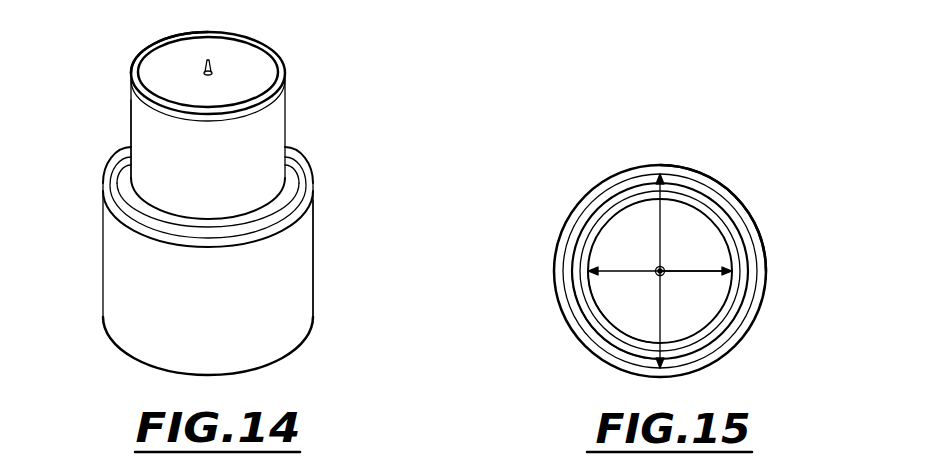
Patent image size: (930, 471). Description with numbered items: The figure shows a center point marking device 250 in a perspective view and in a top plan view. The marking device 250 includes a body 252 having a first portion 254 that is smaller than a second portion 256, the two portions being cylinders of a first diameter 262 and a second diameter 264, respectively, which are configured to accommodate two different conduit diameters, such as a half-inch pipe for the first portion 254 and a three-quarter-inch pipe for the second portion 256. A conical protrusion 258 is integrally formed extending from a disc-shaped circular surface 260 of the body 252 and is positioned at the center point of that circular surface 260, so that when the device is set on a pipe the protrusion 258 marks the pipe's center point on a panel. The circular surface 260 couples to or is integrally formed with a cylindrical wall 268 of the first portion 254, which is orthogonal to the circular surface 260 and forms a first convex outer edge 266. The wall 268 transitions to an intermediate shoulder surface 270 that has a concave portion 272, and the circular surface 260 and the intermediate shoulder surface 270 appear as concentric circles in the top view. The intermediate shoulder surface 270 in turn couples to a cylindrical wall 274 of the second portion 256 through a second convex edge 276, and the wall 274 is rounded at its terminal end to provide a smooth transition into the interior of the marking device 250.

In FIG. 14, the marking device 250 is at (302, 68).
In FIG. 15, the marking device 250 is at (522, 158).
In FIG. 14, the body 252 is at (202, 261).
In FIG. 15, the body 252 is at (540, 306).
In FIG. 14, the first portion 254 is at (275, 124).
In FIG. 15, the first portion 254 is at (630, 318).
In FIG. 14, the second portion 256 is at (297, 272).
In FIG. 15, the second portion 256 is at (640, 357).
In FIG. 14, the conical protrusion 258 is at (206, 60).
In FIG. 15, the conical protrusion 258 is at (664, 266).
In FIG. 14, the circular surface 260 is at (236, 60).
In FIG. 15, the circular surface 260 is at (620, 242).
In FIG. 15, the first diameter 262 is at (679, 272).
In FIG. 15, the second diameter 264 is at (660, 298).
In FIG. 14, the first convex outer edge 266 is at (131, 77).
In FIG. 14, the cylindrical wall 268 is at (146, 136).
In FIG. 15, the cylindrical wall 268 is at (690, 196).
In FIG. 14, the intermediate shoulder surface 270 is at (298, 172).
In FIG. 15, the intermediate shoulder surface 270 is at (710, 346).
In FIG. 14, the concave portion 272 is at (140, 215).
In FIG. 15, the concave portion 272 is at (722, 219).
In FIG. 14, the cylindrical wall 274 is at (110, 300).
In FIG. 15, the cylindrical wall 274 is at (600, 180).
In FIG. 14, the second convex edge 276 is at (295, 208).
In FIG. 15, the second convex edge 276 is at (745, 328).